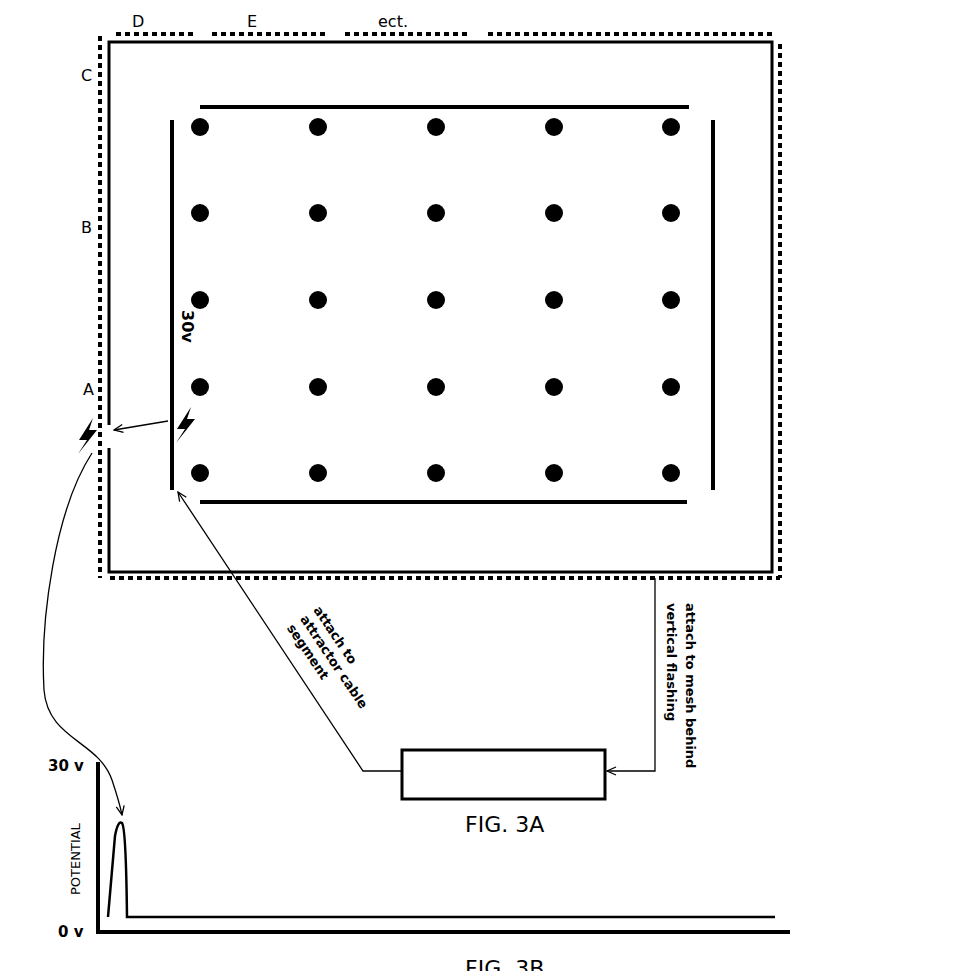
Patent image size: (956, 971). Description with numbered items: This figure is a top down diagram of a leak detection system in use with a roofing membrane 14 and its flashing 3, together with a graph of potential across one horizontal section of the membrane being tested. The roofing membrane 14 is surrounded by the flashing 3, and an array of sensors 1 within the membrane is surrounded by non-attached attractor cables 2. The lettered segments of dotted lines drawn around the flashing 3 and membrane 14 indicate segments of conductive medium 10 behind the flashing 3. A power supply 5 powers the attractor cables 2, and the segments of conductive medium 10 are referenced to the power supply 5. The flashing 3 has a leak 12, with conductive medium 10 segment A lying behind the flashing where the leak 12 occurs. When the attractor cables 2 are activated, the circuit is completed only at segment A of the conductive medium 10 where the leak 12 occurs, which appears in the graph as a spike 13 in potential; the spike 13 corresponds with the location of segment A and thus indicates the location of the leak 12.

In FIG. 3A, the sensors 1 is at (678, 207).
In FIG. 3A, the attractor cables 2 is at (716, 383).
In FIG. 3A, the flashing 3 is at (112, 65).
In FIG. 3B, the flashing 3 is at (742, 970).
In FIG. 3A, the power supply 5 is at (471, 749).
In FIG. 3A, the conductive medium 10 is at (100, 352).
In FIG. 3A, the leak 12 is at (116, 445).
In FIG. 3B, the leak 12 is at (85, 970).
In FIG. 3B, the spike 13 is at (132, 836).
In FIG. 3A, the roofing membrane 14 is at (673, 156).